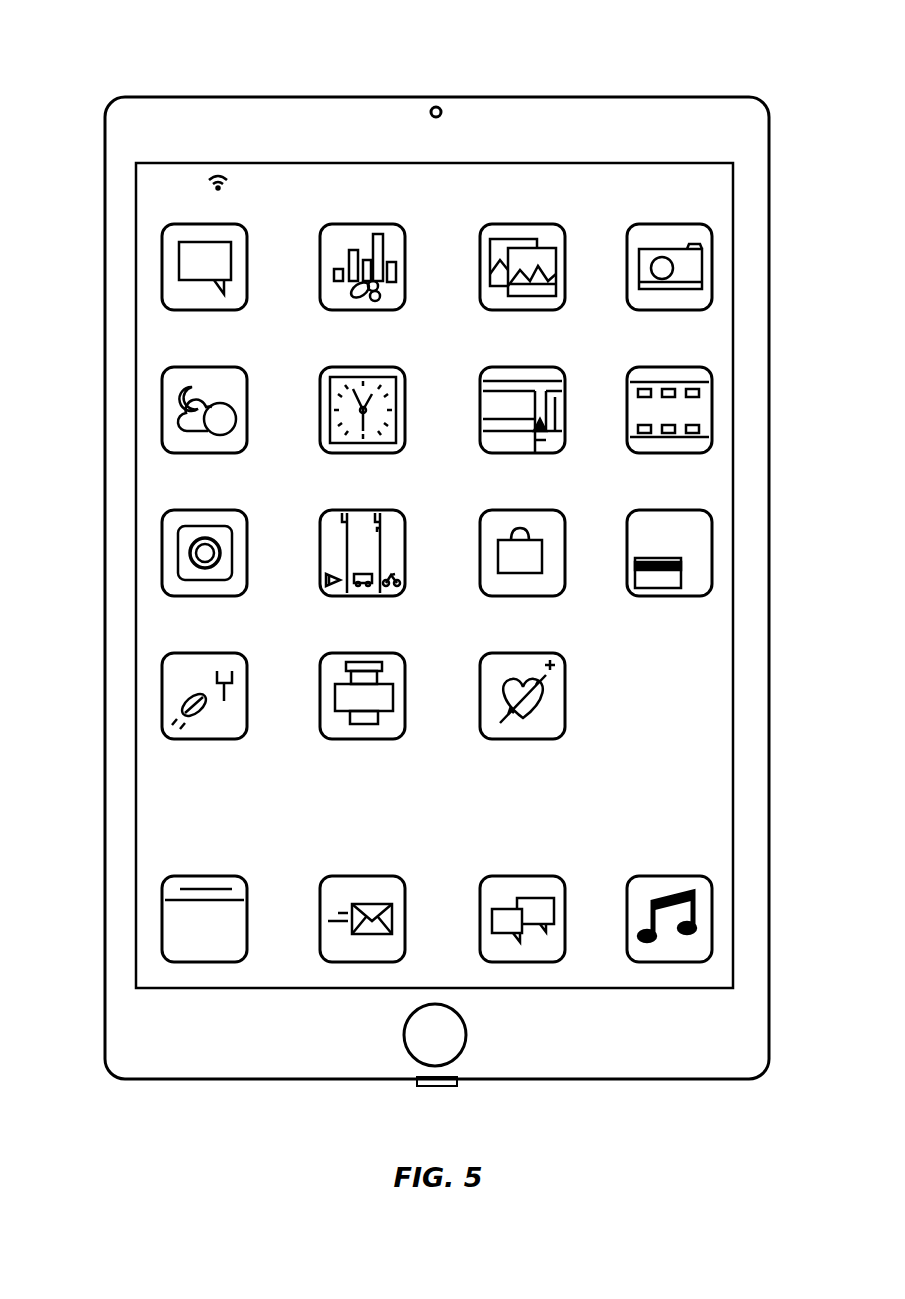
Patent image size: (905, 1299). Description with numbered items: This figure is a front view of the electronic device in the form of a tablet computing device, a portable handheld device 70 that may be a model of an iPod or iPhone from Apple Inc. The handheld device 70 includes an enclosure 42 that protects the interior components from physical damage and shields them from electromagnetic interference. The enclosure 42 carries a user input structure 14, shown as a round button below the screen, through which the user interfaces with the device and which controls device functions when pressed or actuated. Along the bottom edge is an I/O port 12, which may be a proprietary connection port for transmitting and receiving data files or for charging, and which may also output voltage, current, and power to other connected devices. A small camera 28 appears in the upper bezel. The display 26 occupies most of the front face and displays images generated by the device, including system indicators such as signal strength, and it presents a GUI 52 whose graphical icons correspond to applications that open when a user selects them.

The portable handheld device 70 is at (112, 54).
The camera 28 is at (424, 98).
The enclosure 42 is at (769, 537).
The display 26 is at (720, 749).
The GUI 52 is at (716, 690).
The user input structure 14 is at (467, 1037).
The I/O port 12 is at (437, 1087).